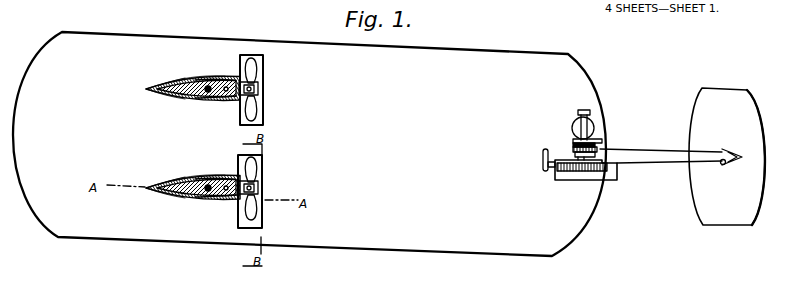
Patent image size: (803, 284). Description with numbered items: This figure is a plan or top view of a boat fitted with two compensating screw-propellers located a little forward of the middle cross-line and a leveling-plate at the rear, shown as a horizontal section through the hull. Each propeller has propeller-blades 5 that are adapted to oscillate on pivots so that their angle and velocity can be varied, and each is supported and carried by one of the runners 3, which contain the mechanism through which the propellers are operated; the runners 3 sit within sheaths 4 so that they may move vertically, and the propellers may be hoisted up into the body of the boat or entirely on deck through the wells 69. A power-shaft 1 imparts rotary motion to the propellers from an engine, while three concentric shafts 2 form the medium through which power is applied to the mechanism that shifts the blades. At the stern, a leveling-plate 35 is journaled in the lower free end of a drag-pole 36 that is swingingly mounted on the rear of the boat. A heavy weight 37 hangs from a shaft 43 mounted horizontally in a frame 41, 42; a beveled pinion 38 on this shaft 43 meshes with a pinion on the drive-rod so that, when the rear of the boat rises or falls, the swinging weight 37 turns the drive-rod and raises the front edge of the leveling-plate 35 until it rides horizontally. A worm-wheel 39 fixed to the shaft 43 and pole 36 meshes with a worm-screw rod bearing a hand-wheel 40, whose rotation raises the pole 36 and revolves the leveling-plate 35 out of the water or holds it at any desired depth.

The power-shaft 1 is at (226, 100).
The concentric shafts 2 is at (202, 99).
The runners 3 is at (178, 96).
The sheaths 4 is at (206, 74).
The propeller-blades 5 is at (264, 118).
The wells 69 is at (266, 62).
The leveling-plate 35 is at (727, 156).
The drag-pole 36 is at (657, 161).
The heavy weight 37 is at (596, 126).
The beveled pinion 38 is at (571, 143).
The worm-wheel 39 is at (598, 181).
The hand-wheel 40 is at (542, 166).
The frame 41 is at (583, 178).
The frame 42 is at (582, 109).
The shaft 43 is at (579, 119).